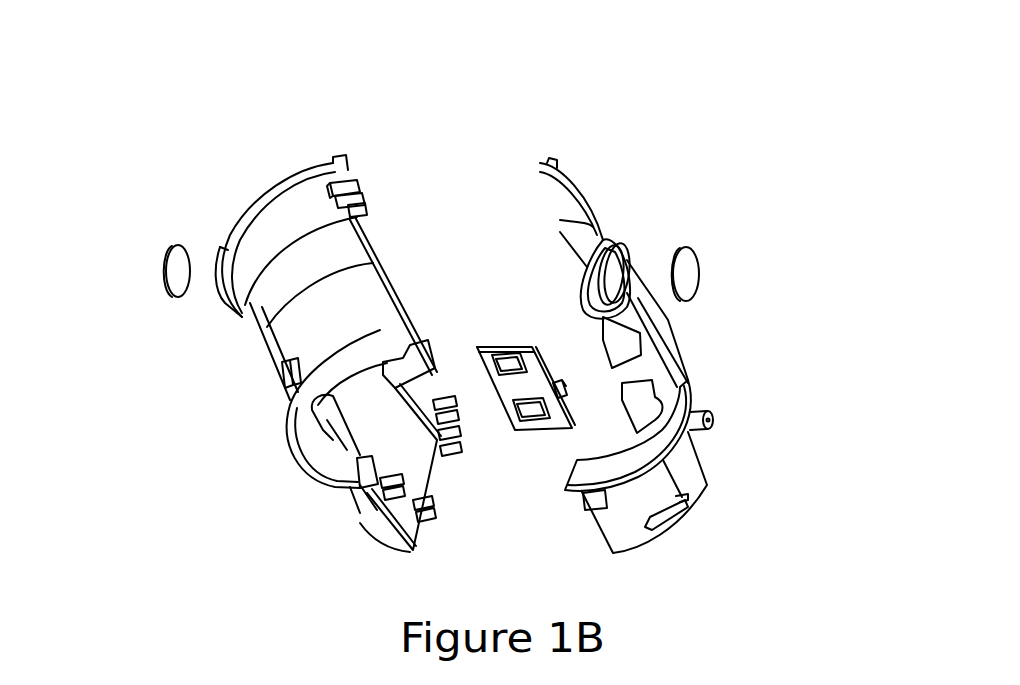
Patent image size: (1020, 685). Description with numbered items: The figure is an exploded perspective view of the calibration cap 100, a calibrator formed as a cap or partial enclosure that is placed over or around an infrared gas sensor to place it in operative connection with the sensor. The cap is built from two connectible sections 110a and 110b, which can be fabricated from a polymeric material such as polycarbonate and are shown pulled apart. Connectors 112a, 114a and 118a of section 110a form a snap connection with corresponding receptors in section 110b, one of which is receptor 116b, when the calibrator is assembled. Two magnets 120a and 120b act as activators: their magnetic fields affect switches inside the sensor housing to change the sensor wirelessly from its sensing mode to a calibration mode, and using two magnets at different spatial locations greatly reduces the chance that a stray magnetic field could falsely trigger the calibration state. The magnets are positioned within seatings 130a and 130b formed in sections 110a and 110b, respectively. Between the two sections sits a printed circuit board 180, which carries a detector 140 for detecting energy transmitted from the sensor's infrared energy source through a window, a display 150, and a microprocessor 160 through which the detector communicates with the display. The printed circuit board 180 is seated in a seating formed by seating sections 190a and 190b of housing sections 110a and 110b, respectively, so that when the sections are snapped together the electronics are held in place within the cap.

The calibration cap 100 is at (600, 94).
The section 110a is at (255, 181).
The section 110b is at (593, 177).
The connector 112a is at (437, 523).
The connector 114a is at (458, 443).
The receptor 116b is at (360, 177).
The connector 118a is at (383, 505).
The magnet 120a is at (160, 258).
The magnet 120b is at (700, 250).
The seating 130a is at (218, 303).
The seating 130b is at (620, 240).
The detector 140 is at (496, 368).
The display 150 is at (570, 382).
The microprocessor 160 is at (528, 427).
The printed circuit board 180 is at (496, 323).
The seating section 190a is at (395, 372).
The seating section 190b is at (633, 372).